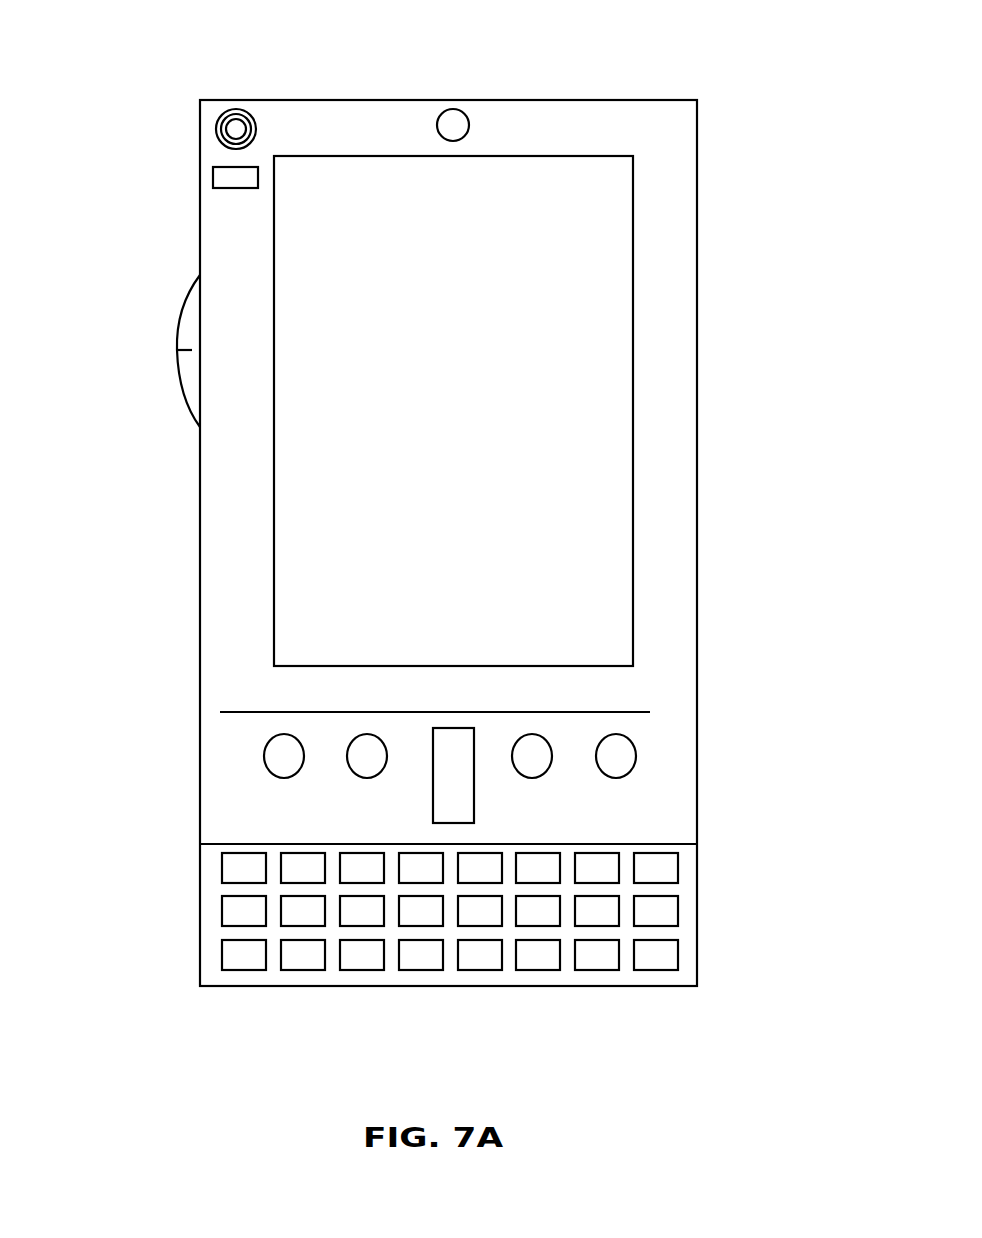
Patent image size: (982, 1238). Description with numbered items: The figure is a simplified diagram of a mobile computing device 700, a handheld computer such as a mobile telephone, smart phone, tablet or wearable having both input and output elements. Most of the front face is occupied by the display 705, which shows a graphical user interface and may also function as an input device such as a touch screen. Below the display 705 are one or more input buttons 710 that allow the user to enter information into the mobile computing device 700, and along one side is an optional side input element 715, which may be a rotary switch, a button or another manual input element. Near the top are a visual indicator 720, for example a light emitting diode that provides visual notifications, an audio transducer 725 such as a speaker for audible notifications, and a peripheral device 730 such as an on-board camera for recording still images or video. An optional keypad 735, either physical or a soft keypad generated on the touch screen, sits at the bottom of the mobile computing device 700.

The mobile computing device 700 is at (685, 118).
The display 705 is at (383, 580).
The input buttons 710 is at (452, 782).
The side input element 715 is at (176, 350).
The visual indicator 720 is at (213, 178).
The audio transducer 725 is at (216, 129).
The peripheral device 730 is at (470, 125).
The keypad 735 is at (208, 962).